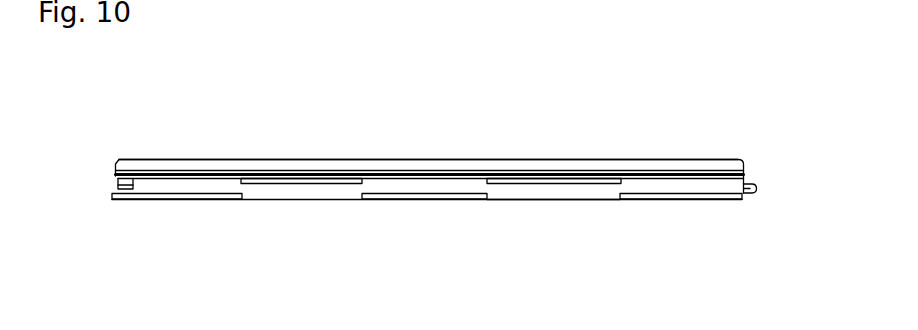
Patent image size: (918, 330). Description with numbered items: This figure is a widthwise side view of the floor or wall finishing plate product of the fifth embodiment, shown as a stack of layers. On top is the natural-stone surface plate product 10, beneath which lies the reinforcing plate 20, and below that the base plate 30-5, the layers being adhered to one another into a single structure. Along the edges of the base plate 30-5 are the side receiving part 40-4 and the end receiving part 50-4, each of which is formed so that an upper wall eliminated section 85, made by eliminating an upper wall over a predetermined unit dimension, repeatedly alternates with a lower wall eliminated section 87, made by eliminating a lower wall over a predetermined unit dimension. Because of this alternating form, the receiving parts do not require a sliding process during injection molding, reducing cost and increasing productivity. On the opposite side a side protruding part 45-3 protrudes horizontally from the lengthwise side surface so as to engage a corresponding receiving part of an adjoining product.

The natural-stone surface plate product 10 is at (453, 152).
The reinforcing plate 20 is at (178, 165).
The lower wall eliminated section 87 is at (118, 179).
The side receiving part 40-4 is at (121, 187).
The upper wall eliminated section 85 is at (114, 199).
The base plate 30-5 is at (329, 212).
The end receiving part 50-4 is at (551, 190).
The side protruding part 45-3 is at (757, 190).